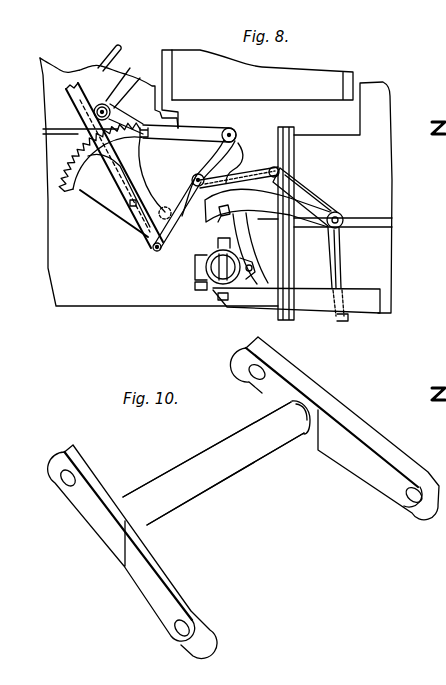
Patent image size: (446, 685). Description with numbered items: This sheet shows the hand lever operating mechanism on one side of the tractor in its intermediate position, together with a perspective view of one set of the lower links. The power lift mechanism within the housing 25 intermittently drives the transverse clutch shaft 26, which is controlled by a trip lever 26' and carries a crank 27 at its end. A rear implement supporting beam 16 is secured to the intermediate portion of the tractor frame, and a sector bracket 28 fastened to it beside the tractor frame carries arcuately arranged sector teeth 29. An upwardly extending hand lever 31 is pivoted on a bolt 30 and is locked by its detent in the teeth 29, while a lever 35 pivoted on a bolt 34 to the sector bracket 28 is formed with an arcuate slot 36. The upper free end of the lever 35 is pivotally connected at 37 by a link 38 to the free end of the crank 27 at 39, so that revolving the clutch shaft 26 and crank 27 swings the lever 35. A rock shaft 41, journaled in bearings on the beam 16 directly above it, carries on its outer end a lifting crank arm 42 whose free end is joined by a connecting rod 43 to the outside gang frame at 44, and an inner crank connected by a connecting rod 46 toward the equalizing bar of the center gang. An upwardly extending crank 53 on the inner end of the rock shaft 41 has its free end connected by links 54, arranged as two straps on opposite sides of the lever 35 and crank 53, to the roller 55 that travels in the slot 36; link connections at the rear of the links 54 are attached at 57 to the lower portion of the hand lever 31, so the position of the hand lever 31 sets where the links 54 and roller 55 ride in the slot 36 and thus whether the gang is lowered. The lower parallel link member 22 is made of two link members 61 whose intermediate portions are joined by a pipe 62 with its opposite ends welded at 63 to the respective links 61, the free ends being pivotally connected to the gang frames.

In FIG. 8, the housing 25 is at (93, 72).
In FIG. 8, the trip lever 26' is at (114, 44).
In FIG. 8, the clutch shaft 26 is at (123, 80).
In FIG. 8, the crank 27 is at (122, 112).
In FIG. 8, the sector bracket 28 is at (184, 240).
In FIG. 8, the sector teeth 29 is at (88, 162).
In FIG. 8, the bolt 30 is at (133, 221).
In FIG. 8, the hand lever 31 is at (84, 104).
In FIG. 8, the bolt 34 is at (166, 207).
In FIG. 8, the lever 35 is at (240, 153).
In FIG. 8, the arcuate slot 36 is at (210, 156).
In FIG. 8, the pivotal connection 37 is at (237, 134).
In FIG. 8, the link 38 is at (188, 128).
In FIG. 8, the pivotal connection 39 is at (144, 140).
In FIG. 8, the rock shaft 41 is at (220, 216).
In FIG. 8, the lifting crank arm 42 is at (271, 212).
In FIG. 8, the connecting rod 43 is at (343, 249).
In FIG. 8, the connection 44 is at (312, 188).
In FIG. 8, the connecting rod 46 is at (333, 268).
In FIG. 8, the crank 53 is at (277, 203).
In FIG. 8, the link 54 is at (239, 178).
In FIG. 8, the pivot 55 is at (192, 182).
In FIG. 8, the connection 57 is at (151, 251).
In FIG. 8, the rear implement supporting beam 16 is at (222, 289).
In FIG. 10, the parallel link member 22 is at (95, 547).
In FIG. 10, the link member 61 is at (362, 424).
In FIG. 10, the pipe 62 is at (235, 476).
In FIG. 10, the weld 63 is at (306, 406).